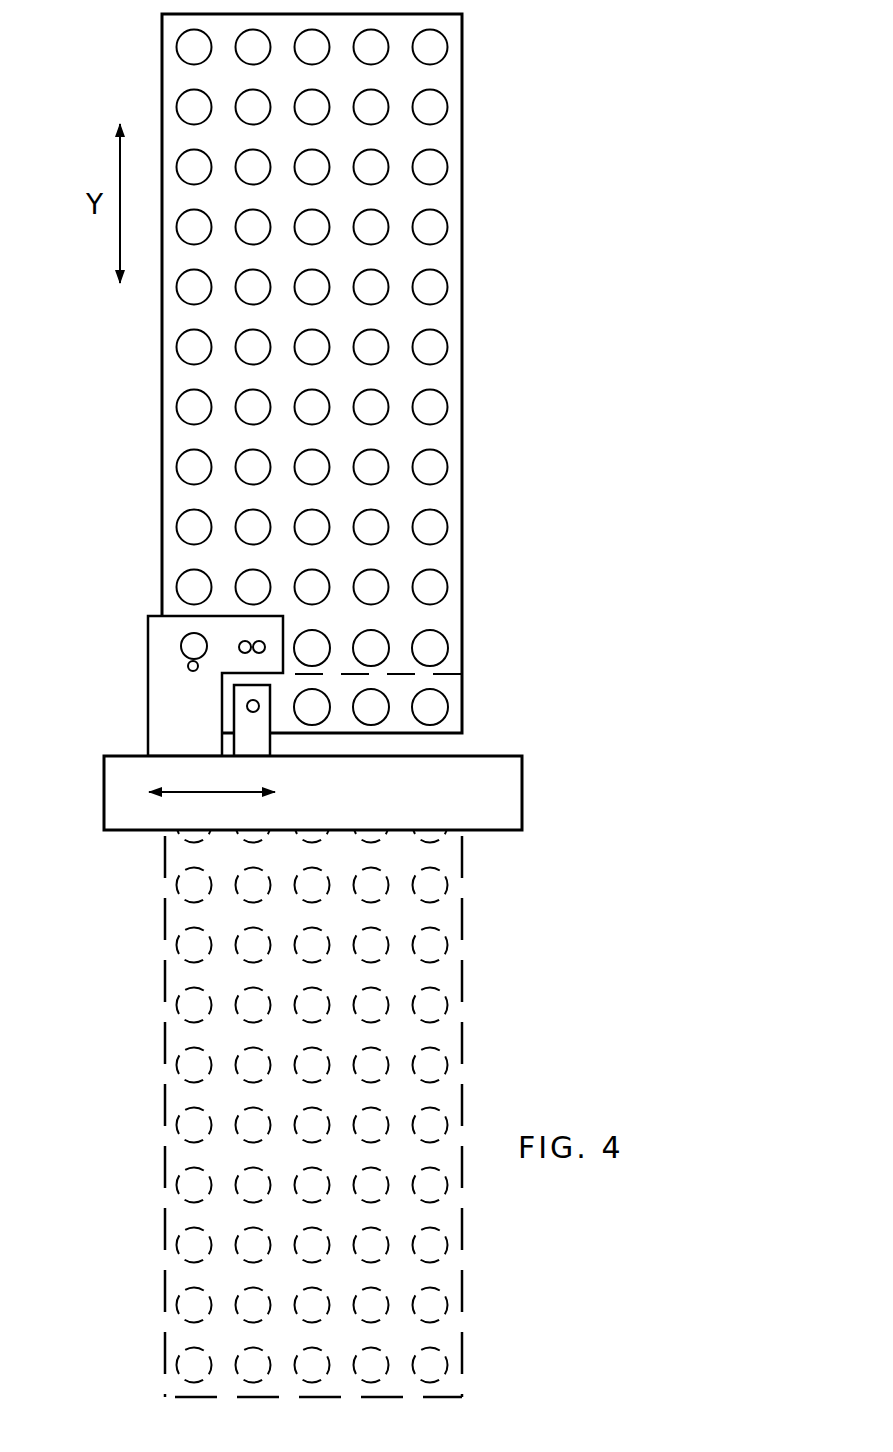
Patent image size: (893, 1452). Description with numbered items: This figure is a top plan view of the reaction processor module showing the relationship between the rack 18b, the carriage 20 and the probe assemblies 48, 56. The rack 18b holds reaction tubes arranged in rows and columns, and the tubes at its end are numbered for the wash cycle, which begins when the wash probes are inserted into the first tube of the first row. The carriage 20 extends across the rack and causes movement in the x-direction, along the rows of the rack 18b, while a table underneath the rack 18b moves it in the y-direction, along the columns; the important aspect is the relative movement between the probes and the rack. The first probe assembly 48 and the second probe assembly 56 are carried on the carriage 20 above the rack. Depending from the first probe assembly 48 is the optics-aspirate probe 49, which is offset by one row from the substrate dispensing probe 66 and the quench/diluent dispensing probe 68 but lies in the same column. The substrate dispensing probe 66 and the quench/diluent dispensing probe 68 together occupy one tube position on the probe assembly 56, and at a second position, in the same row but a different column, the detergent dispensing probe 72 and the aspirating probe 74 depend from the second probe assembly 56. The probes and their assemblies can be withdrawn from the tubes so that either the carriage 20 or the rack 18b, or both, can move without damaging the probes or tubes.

The rack 18b is at (462, 378).
The carriage 20 is at (508, 793).
The first probe assembly 48 is at (252, 739).
The optics-aspirate probe 49 is at (250, 706).
The second probe assembly 56 is at (168, 696).
The substrate dispensing probe 66 is at (245, 643).
The quench/diluent dispensing probe 68 is at (259, 643).
The detergent dispensing probe 72 is at (190, 667).
The aspirating probe 74 is at (193, 646).